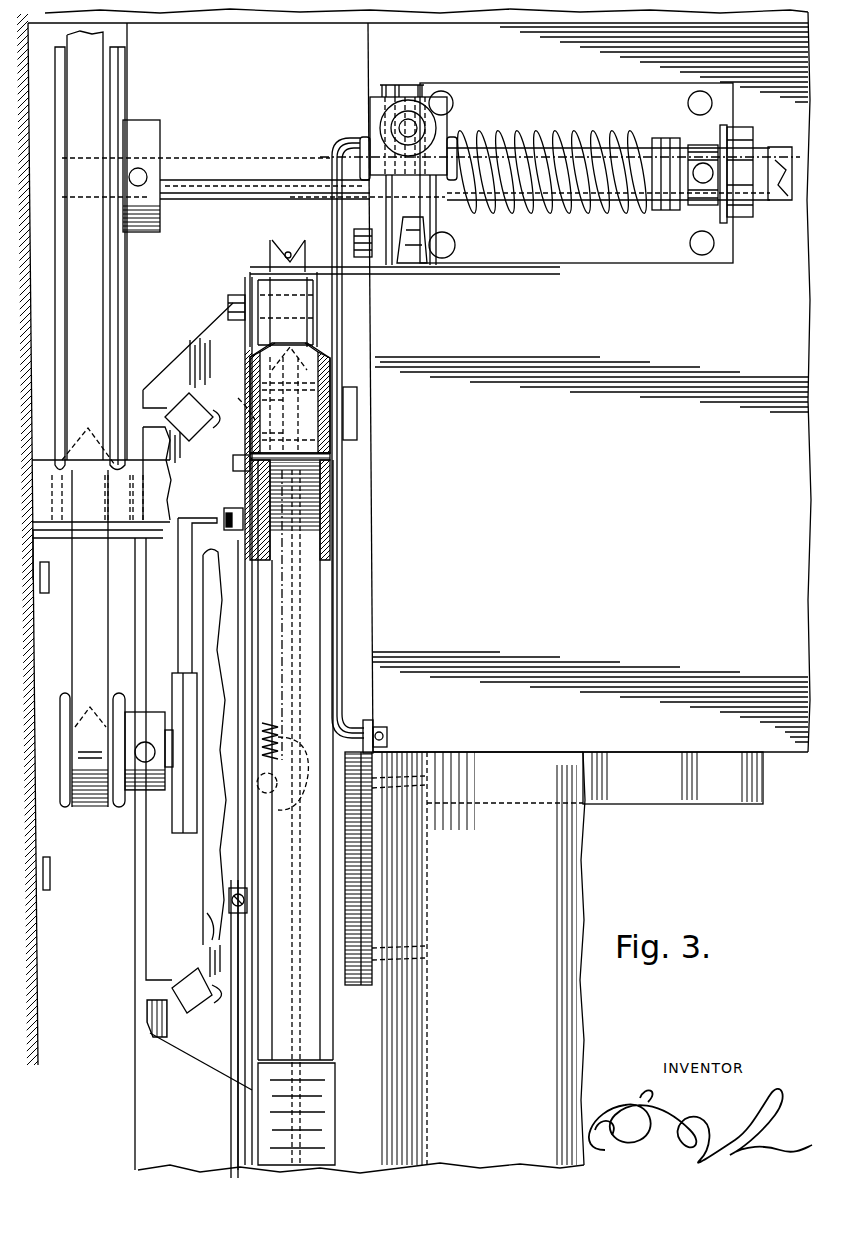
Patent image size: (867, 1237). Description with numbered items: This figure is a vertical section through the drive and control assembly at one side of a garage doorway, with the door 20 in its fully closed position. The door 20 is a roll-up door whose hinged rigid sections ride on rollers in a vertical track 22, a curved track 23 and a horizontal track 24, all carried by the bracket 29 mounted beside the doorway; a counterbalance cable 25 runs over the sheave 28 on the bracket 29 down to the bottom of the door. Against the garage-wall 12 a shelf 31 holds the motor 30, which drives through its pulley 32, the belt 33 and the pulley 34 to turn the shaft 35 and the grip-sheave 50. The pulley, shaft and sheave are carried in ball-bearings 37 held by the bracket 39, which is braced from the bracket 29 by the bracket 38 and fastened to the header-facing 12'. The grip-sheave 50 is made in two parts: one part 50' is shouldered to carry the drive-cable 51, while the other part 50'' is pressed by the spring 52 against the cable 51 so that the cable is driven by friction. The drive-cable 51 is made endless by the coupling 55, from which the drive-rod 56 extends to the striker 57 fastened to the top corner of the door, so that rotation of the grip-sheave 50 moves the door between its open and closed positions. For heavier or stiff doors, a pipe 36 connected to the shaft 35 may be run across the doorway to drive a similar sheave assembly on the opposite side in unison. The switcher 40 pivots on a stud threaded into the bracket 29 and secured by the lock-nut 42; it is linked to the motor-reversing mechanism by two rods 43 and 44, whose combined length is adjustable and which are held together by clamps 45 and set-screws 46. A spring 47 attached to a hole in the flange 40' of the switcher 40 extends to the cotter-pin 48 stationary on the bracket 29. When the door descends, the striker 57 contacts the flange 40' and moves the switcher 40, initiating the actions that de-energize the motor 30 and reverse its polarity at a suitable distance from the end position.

The garage-wall 12 is at (208, 593).
The header-facing 12' is at (419, 380).
The door 20 is at (572, 868).
The vertical track 22 is at (316, 1118).
The curved track 23 is at (310, 660).
The horizontal track 24 is at (328, 357).
The cable 25 is at (301, 817).
The sheave 28 is at (300, 250).
The bracket 29 is at (245, 350).
The motor 30 is at (240, 868).
The shelf 31 is at (124, 550).
The pulley 32 is at (68, 805).
The belt 33 is at (100, 285).
The pulley 34 is at (110, 93).
The shaft 35 is at (183, 168).
The pipe 36 is at (790, 152).
The ball-bearing 37 is at (746, 107).
The bracket 38 is at (258, 275).
The bracket 39 is at (576, 96).
The switcher 40 is at (227, 455).
The flange 40' is at (382, 406).
The lock-nut 42 is at (240, 505).
The rod 43 is at (190, 896).
The rod 44 is at (240, 1095).
The clamp 45 is at (235, 900).
The set-screw 46 is at (220, 925).
The spring 47 is at (268, 583).
The cotter-pin 48 is at (291, 772).
The grip-sheave 50 is at (545, 119).
The shouldered part of grip-sheave 50' is at (405, 241).
The pressed part of grip-sheave 50'' is at (450, 241).
The drive-cable 51 is at (410, 220).
The spring 52 is at (640, 205).
The coupling 55 is at (372, 108).
The drive-rod 56 is at (325, 207).
The striker 57 is at (352, 872).